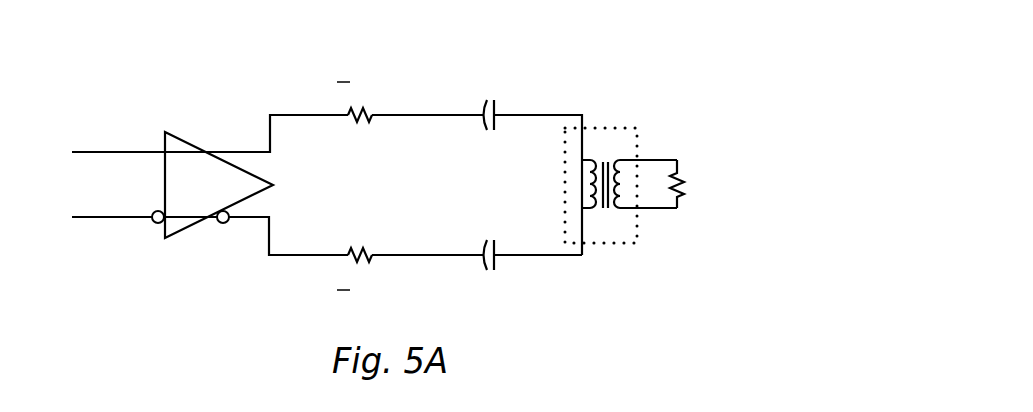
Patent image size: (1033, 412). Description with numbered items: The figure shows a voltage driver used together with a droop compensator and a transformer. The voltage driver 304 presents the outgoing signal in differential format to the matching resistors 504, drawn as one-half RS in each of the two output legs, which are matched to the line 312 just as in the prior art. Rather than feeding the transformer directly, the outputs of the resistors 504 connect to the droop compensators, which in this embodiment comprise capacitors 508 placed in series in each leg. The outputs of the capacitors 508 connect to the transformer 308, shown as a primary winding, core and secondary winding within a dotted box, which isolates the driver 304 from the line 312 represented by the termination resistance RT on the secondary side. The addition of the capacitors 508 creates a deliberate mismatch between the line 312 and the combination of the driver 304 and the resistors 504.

The voltage driver 304 is at (212, 213).
The matching resistors 504 is at (372, 108).
The capacitors 508 is at (497, 100).
The transformer 308 is at (629, 126).
The line 312 is at (677, 172).